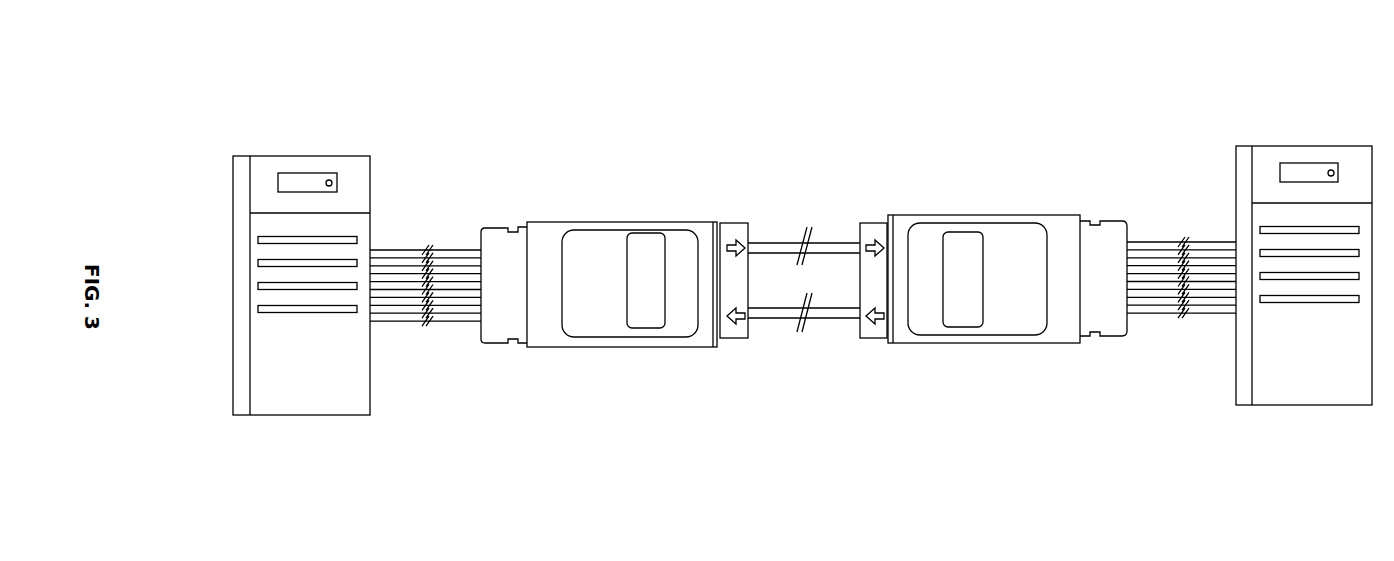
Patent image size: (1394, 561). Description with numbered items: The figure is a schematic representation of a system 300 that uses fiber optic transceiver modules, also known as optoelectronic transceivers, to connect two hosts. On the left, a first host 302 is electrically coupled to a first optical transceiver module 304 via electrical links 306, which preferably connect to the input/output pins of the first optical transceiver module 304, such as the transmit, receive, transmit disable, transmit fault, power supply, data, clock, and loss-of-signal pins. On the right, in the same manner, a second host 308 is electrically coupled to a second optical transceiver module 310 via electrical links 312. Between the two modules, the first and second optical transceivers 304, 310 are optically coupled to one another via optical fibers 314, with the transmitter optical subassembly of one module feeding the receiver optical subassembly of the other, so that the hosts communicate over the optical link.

The system 300 is at (803, 88).
The first host 302 is at (300, 415).
The first optical transceiver module 304 is at (592, 221).
The electrical links 306 is at (413, 226).
The second host 308 is at (1312, 405).
The second optical transceiver module 310 is at (977, 213).
The electrical links 312 is at (1189, 340).
The optical fibers 314 is at (802, 348).